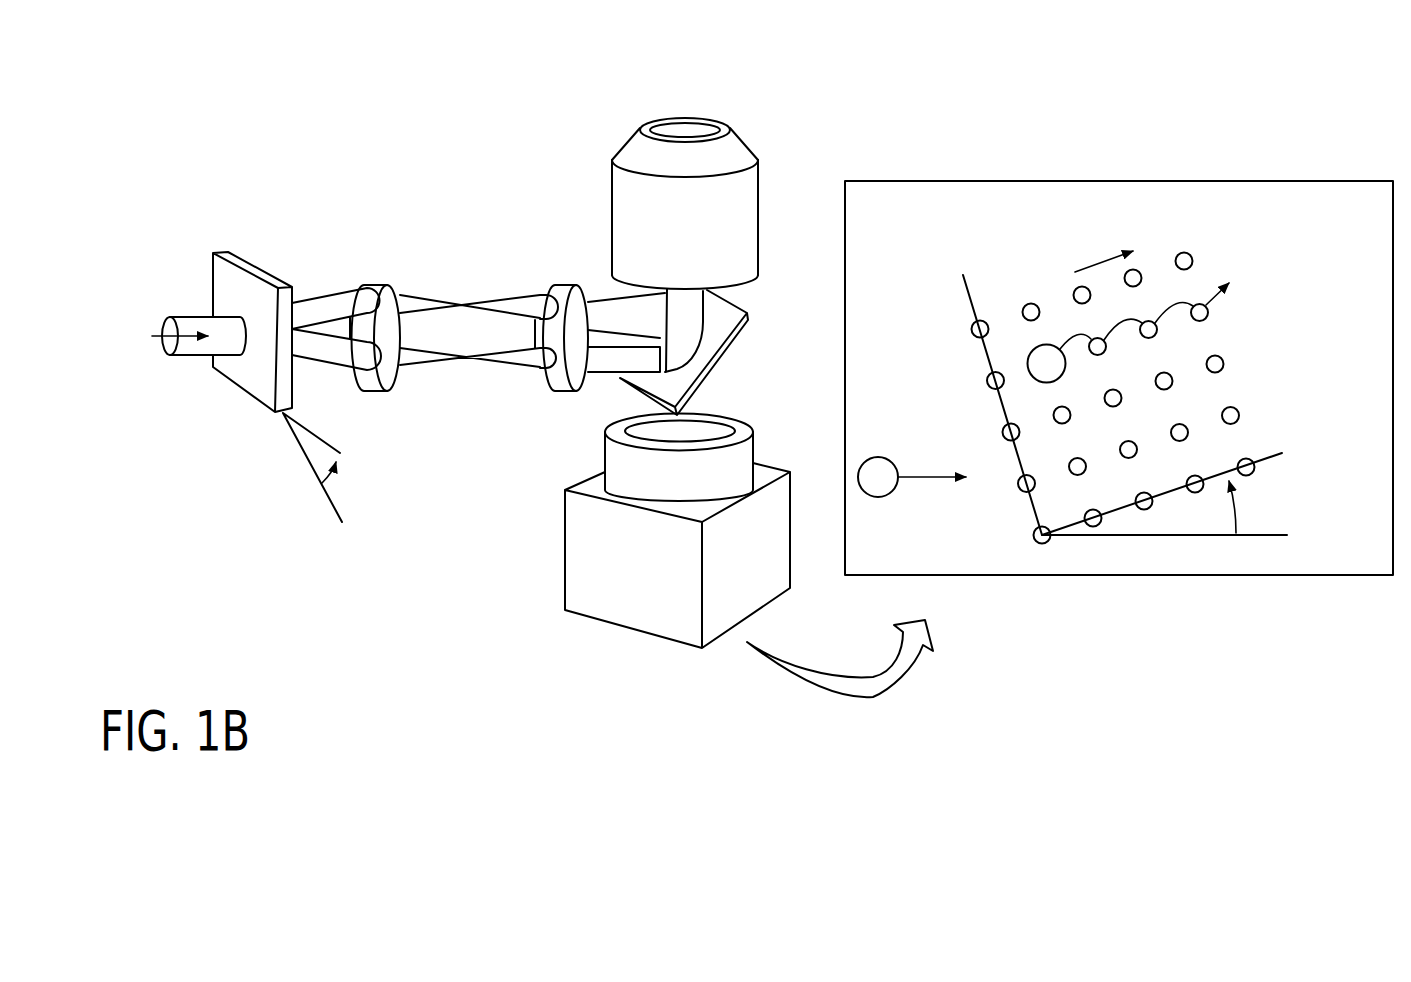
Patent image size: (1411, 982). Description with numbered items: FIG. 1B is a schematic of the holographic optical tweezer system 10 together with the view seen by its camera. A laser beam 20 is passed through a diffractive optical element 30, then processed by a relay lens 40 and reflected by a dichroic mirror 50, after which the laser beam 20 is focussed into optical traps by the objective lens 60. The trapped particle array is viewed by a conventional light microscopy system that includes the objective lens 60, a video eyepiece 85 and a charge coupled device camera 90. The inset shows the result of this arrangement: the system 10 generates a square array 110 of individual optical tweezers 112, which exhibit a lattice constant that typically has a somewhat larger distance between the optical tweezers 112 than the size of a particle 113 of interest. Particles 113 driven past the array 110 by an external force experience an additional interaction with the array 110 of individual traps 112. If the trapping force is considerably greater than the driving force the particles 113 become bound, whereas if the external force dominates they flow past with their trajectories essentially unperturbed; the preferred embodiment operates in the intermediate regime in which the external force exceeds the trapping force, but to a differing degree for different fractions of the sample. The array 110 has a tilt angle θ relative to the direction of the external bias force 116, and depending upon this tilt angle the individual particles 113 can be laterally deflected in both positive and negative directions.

The holographic optical tweezer system 10 is at (385, 591).
The laser beam 20 is at (186, 366).
The diffractive optical element 30 is at (252, 249).
The relay lens 40 is at (534, 263).
The dichroic mirror 50 is at (605, 407).
The objective lens 60 is at (603, 209).
The video eyepiece 85 is at (631, 475).
The charge coupled device camera 90 is at (592, 581).
The square array 110 is at (1119, 413).
The optical tweezers 112 is at (1190, 247).
The particle 113 is at (1024, 363).
The external bias force 116 is at (1199, 540).